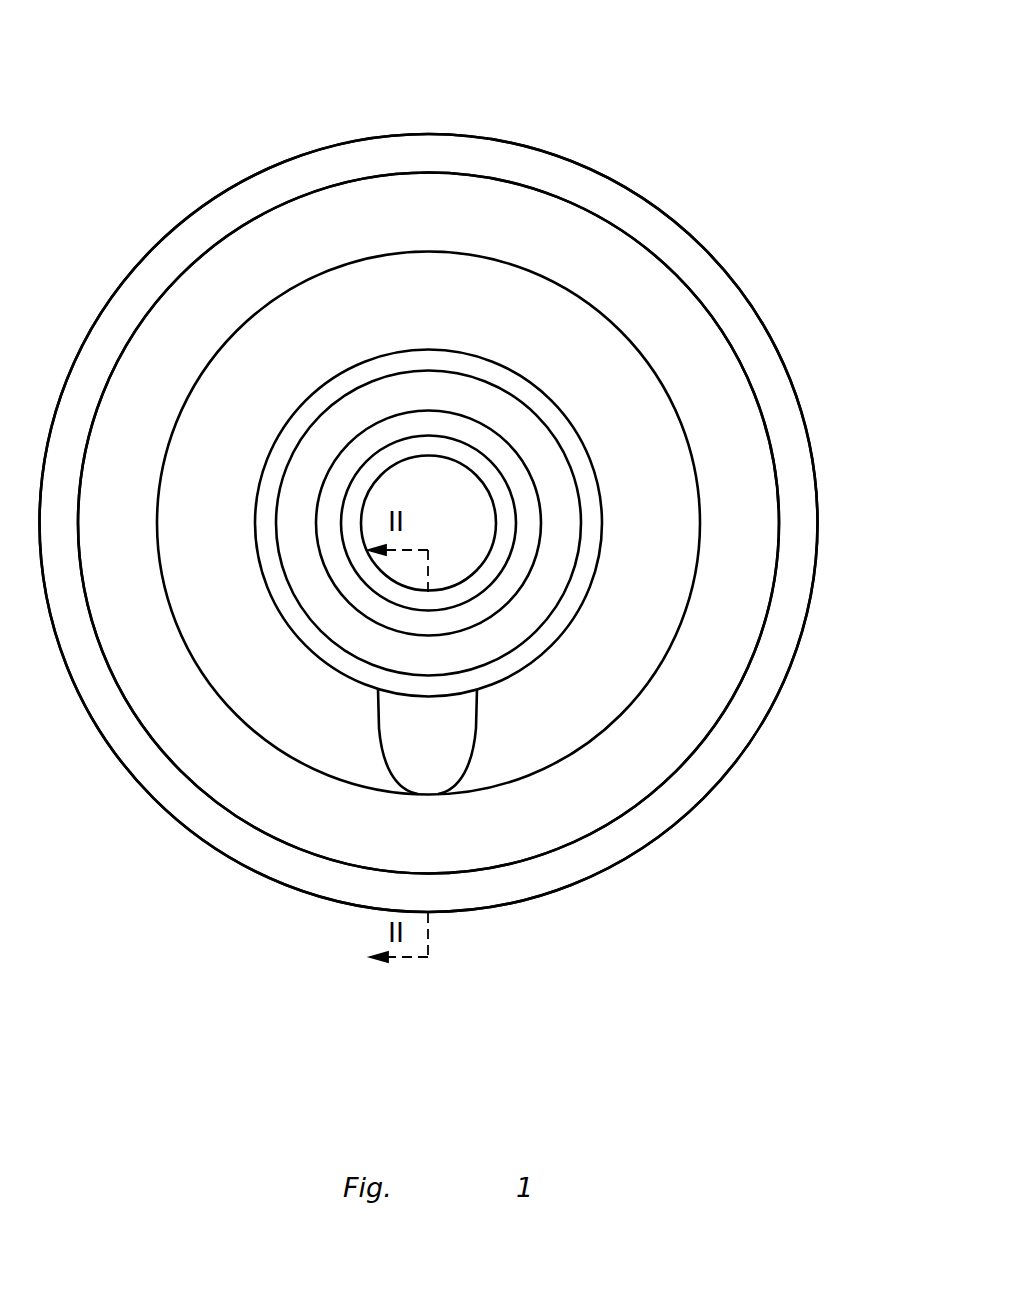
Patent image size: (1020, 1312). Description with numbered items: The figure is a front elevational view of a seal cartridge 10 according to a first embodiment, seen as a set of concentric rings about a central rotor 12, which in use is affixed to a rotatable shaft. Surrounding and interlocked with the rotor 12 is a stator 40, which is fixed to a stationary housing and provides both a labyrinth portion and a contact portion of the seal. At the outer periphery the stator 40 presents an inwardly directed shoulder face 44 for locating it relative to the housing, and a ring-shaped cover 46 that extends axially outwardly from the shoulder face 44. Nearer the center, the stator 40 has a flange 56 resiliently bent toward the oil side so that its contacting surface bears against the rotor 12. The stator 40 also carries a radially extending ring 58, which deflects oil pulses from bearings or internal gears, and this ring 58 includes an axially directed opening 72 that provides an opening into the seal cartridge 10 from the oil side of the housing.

The seal cartridge 10 is at (762, 27).
The rotor 12 is at (477, 580).
The stator 40 is at (798, 503).
The shoulder face 44 is at (740, 722).
The ring-shaped cover 46 is at (752, 296).
The flange 56 is at (553, 622).
The radially extending ring 58 is at (600, 793).
The axially directed opening 72 is at (455, 758).